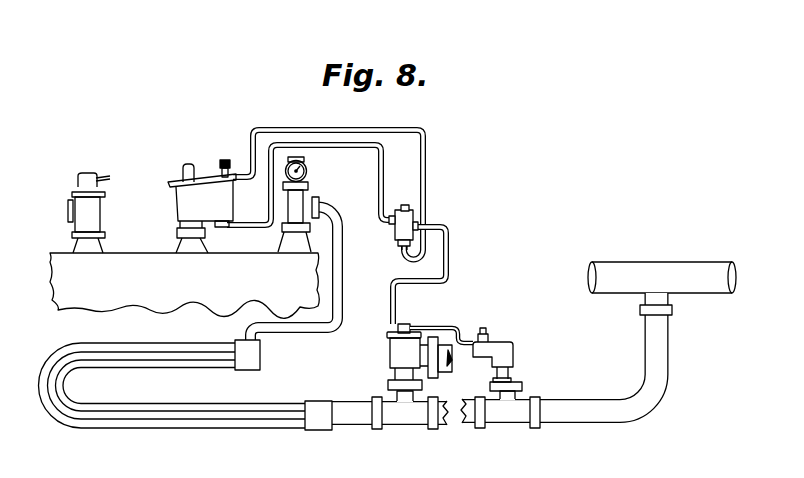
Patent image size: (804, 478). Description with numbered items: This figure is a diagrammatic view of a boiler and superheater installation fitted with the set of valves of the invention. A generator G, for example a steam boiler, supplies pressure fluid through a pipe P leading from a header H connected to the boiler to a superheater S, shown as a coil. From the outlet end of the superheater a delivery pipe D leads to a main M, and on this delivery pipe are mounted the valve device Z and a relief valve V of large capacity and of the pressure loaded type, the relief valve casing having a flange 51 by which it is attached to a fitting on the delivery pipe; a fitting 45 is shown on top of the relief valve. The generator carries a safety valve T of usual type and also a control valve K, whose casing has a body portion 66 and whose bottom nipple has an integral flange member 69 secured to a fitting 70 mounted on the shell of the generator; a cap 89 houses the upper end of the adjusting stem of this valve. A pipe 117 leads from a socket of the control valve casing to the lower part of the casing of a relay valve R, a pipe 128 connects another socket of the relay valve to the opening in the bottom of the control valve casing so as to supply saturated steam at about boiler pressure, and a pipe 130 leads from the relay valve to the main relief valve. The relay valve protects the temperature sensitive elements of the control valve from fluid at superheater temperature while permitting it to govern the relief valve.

The pipe 117 is at (275, 128).
The pipe 128 is at (320, 146).
The pipe 130 is at (450, 252).
The cap 89 is at (190, 165).
The body portion 66 is at (229, 193).
The integral flange member 69 is at (178, 232).
The fitting 70 is at (191, 240).
The fitting on valve V 45 is at (418, 328).
The flange 51 is at (379, 383).
The safety valve T is at (82, 206).
The control valve K is at (196, 191).
The generator G is at (146, 268).
The header H is at (298, 208).
The relay valve R is at (406, 202).
The pipe P is at (343, 276).
The relief valve V is at (396, 342).
The valve device Z is at (520, 328).
The main M is at (656, 268).
The superheater S is at (222, 428).
The delivery pipe D is at (368, 421).